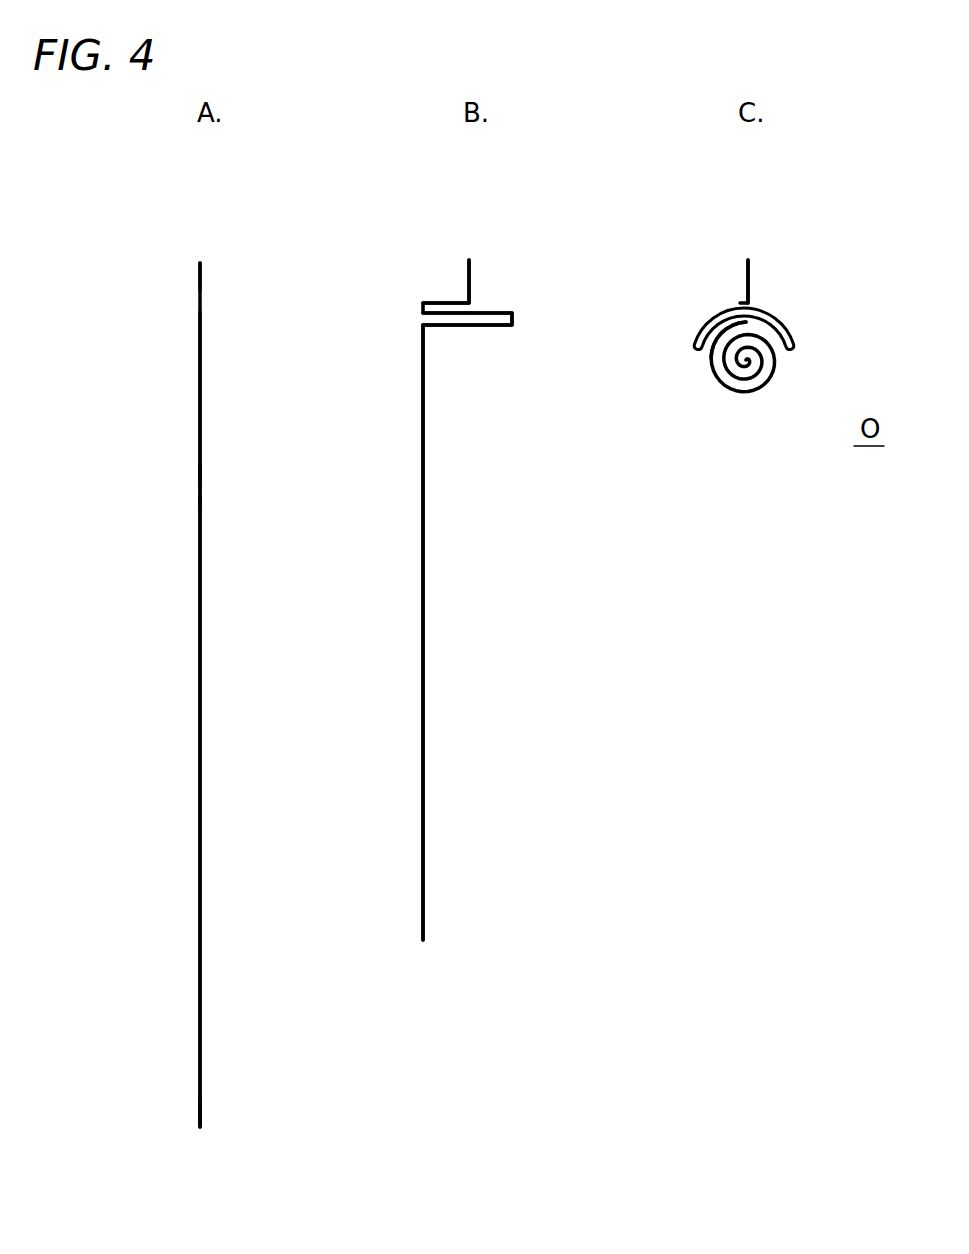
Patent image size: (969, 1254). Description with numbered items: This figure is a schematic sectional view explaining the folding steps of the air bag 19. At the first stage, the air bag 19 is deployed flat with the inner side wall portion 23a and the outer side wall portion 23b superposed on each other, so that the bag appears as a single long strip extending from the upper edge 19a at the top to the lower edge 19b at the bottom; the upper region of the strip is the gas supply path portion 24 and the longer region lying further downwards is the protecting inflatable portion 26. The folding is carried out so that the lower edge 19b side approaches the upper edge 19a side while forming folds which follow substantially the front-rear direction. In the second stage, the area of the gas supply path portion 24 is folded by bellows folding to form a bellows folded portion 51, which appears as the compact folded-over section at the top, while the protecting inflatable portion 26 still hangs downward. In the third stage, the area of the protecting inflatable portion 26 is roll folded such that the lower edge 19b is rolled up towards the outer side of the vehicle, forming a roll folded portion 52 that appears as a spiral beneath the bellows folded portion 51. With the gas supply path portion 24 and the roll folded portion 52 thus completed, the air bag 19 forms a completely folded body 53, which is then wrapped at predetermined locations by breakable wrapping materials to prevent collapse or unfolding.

The air bag 19 is at (517, 645).
The upper edge 19a is at (198, 285).
The lower edge 19b is at (200, 1115).
The gas supply path portion 24 is at (172, 312).
The protecting inflatable portion 26 is at (232, 497).
The inner side wall portion 23a is at (200, 497).
The outer side wall portion 23b is at (202, 473).
The bellows folded portion 51 is at (511, 307).
The roll folded portion 52 is at (776, 399).
The completely folded body 53 is at (744, 281).